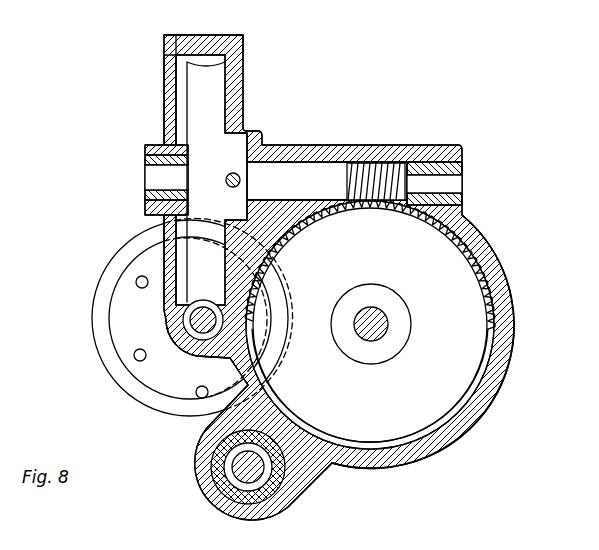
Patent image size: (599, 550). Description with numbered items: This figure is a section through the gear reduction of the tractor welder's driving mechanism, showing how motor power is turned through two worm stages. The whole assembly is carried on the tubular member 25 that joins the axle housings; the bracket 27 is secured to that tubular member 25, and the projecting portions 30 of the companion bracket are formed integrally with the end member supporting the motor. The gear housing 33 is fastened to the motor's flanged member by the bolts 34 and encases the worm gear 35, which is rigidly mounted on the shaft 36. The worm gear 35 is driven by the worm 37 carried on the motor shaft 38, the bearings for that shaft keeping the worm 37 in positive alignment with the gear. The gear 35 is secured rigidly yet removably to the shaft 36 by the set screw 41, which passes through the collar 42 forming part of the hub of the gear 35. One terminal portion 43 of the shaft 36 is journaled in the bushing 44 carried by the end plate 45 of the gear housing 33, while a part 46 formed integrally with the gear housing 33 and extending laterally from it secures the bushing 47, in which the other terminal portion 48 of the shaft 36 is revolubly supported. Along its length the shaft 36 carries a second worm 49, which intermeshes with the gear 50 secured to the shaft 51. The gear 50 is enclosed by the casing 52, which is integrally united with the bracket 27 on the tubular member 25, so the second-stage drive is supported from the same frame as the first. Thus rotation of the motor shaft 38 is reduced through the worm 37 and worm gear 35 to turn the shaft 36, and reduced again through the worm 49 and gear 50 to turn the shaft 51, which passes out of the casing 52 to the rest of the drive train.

The tubular member 25 is at (218, 483).
The bracket 27 is at (323, 461).
The projecting portions 30 is at (185, 445).
The gear housing 33 is at (236, 47).
The bolts 34 is at (136, 282).
The worm gear 35 is at (213, 102).
The shaft 36 is at (306, 173).
The worm 37 is at (183, 321).
The motor shaft 38 is at (204, 352).
The set screw 41 is at (236, 173).
The collar 42 is at (240, 204).
The terminal portion 43 is at (145, 180).
The bushing 44 is at (145, 162).
The end plate 45 is at (170, 107).
The part 46 is at (426, 156).
The bushing 47 is at (458, 168).
The terminal portion 48 is at (452, 183).
The worm 49 is at (376, 165).
The gear 50 is at (458, 270).
The shaft 51 is at (374, 309).
The casing 52 is at (508, 284).